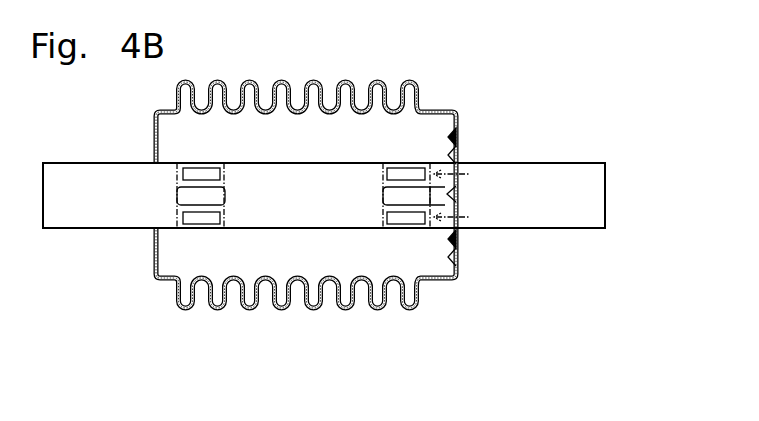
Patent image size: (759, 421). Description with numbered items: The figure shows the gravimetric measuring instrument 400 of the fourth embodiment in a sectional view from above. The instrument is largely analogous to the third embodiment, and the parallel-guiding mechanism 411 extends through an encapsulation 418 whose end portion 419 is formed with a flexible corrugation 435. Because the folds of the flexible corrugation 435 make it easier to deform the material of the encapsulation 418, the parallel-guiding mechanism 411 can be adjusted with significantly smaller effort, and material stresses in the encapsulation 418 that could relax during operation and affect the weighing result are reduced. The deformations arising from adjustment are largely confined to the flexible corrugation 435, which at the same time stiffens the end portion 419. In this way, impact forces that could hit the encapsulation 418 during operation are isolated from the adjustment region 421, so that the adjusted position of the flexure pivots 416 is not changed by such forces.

The gravimetric measuring instrument 400 is at (152, 300).
The parallel-guiding mechanism 411 is at (304, 246).
The flexure pivots 416 is at (407, 229).
The encapsulation 418 is at (248, 310).
The end portion 419 is at (458, 122).
The adjustment region 421 is at (480, 205).
The flexible corrugation 435 is at (458, 143).